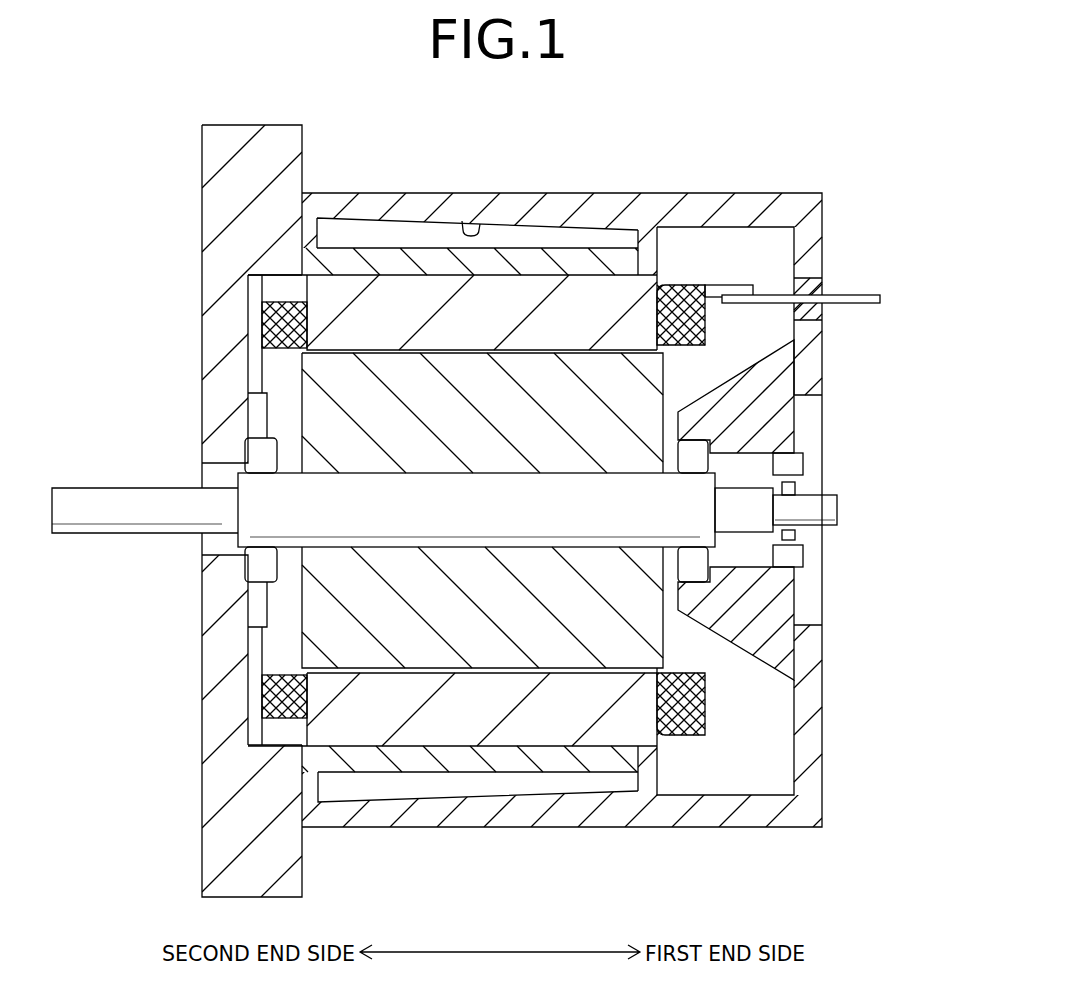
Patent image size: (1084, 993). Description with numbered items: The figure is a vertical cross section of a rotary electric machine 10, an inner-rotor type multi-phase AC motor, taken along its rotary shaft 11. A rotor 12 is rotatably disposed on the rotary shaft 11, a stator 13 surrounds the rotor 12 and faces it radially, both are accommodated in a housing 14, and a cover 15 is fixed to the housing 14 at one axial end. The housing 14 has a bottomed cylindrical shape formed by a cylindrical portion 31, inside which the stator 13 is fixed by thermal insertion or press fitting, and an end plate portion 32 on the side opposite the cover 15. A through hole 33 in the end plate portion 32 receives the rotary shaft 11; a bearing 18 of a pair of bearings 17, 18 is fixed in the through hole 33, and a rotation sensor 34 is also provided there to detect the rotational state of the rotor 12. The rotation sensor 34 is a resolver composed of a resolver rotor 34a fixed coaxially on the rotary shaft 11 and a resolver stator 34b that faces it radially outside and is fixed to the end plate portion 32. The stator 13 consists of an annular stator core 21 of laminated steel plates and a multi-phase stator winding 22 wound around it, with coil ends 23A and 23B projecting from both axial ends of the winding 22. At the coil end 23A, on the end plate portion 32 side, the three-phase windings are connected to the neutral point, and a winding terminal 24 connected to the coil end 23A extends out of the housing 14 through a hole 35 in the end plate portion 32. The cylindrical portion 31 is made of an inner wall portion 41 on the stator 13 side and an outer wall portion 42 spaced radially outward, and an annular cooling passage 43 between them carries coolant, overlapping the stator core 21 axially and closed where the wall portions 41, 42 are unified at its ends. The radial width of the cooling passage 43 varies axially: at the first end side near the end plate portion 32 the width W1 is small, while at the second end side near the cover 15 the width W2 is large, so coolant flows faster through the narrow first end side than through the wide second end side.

The rotary electric machine 10 is at (745, 157).
The rotary shaft 11 is at (97, 488).
The rotor 12 is at (320, 395).
The stator 13 is at (118, 722).
The housing 14 is at (792, 203).
The cover 15 is at (215, 162).
The second bearing 17 is at (258, 438).
The bearing 18 is at (700, 438).
The stator core 21 is at (318, 777).
The stator winding 22 is at (262, 705).
The coil end 23A is at (692, 285).
The coil end 23B is at (275, 300).
The winding terminal 24 is at (877, 284).
The cylindrical portion 31 is at (415, 193).
The end plate portion 32 is at (823, 232).
The through hole 33 is at (793, 558).
The rotation sensor 34 is at (900, 446).
The resolver rotor 34a is at (795, 488).
The resolver stator 34b is at (800, 460).
The hole 35 is at (820, 310).
The inner wall portion 41 is at (527, 248).
The outer wall portion 42 is at (513, 194).
The cooling passage 43 is at (466, 222).
The passage width W1 is at (623, 265).
The passage width W2 is at (373, 262).